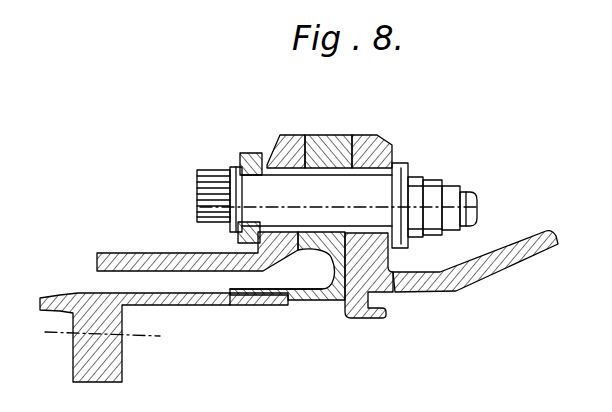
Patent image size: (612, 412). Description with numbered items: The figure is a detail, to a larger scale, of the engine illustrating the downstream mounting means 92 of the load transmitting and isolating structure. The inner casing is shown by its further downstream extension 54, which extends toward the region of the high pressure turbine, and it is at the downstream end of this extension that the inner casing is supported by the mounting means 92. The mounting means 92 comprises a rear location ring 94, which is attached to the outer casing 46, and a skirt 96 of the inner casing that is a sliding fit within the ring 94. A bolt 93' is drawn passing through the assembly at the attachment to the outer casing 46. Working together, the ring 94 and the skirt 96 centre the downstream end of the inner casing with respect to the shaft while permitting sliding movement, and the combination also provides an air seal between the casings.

The outer casing 46 is at (115, 252).
The further downstream extension 54 is at (53, 294).
The mounting means 92 is at (287, 322).
The bolt 93' is at (337, 185).
The rear location ring 94 is at (337, 300).
The skirt 96 is at (213, 305).